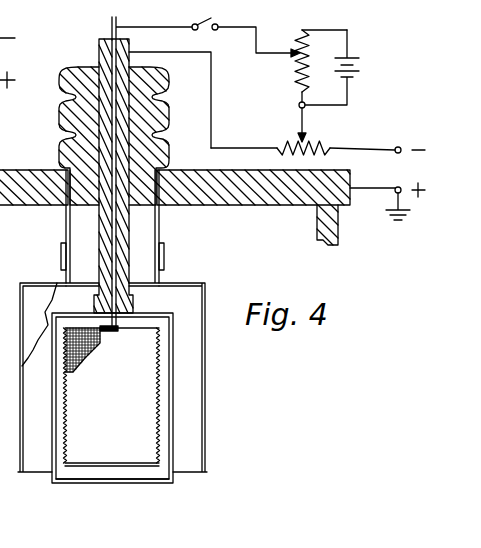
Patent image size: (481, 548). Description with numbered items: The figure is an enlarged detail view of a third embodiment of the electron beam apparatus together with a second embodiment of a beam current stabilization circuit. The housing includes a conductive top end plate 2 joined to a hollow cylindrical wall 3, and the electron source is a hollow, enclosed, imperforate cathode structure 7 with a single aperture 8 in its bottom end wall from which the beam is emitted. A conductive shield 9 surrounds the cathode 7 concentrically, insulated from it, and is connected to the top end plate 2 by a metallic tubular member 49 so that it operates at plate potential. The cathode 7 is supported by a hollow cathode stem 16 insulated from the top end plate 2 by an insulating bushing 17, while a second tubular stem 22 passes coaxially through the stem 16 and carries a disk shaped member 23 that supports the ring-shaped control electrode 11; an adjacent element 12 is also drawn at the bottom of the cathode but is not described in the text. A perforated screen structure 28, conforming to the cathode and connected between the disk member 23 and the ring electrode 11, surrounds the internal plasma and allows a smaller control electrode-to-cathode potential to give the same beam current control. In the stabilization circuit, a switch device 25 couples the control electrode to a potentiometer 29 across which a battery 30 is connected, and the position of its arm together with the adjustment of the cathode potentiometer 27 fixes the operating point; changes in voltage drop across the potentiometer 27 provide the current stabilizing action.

The top end plate 2 is at (260, 206).
The hollow cylindrical wall 3 is at (339, 229).
The cathode structure 7 is at (173, 367).
The aperture 8 is at (118, 484).
The shield 9 is at (207, 388).
The control electrode 11 is at (83, 463).
The bottom plate 12 is at (117, 461).
The cathode stem 16 is at (99, 50).
The insulating bushing 17 is at (62, 107).
The tubular member or stem 22 is at (111, 25).
The disk shaped member 23 is at (136, 330).
The switch device 25 is at (192, 26).
The potentiometer 27 is at (331, 147).
The screen structure 28 is at (156, 414).
The potentiometer 29 is at (300, 34).
The battery 30 is at (353, 61).
The metallic tubular member 49 is at (65, 220).